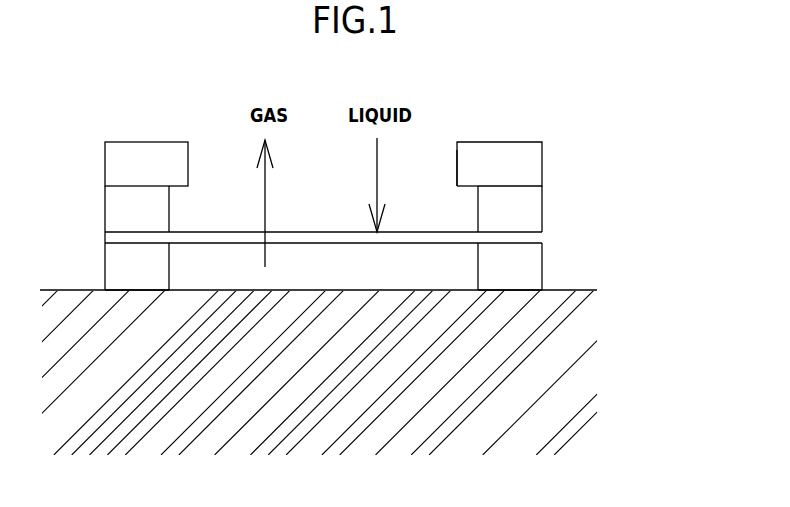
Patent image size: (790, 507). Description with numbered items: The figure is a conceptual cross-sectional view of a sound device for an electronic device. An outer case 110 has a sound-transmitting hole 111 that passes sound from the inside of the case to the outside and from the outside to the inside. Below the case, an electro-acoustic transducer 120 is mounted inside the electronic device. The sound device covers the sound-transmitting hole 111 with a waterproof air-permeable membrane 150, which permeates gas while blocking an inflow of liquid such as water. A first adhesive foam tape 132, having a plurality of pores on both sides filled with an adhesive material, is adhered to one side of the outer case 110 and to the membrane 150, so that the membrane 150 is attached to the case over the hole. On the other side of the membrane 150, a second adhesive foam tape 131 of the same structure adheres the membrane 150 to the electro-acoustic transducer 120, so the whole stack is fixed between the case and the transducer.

The outer case 110 is at (503, 158).
The sound-transmitting hole 111 is at (460, 160).
The electro-acoustic transducer 120 is at (538, 383).
The second adhesive foam tape 131 is at (530, 270).
The first adhesive foam tape 132 is at (528, 210).
The waterproof air-permeable membrane 150 is at (528, 238).